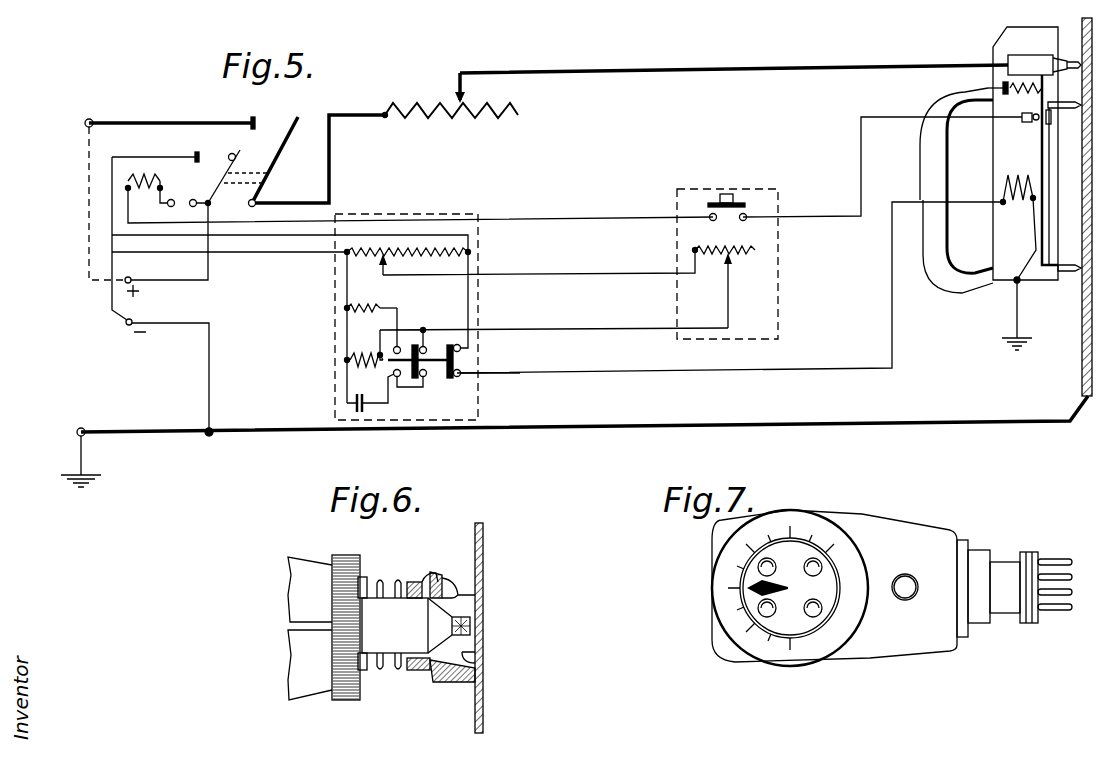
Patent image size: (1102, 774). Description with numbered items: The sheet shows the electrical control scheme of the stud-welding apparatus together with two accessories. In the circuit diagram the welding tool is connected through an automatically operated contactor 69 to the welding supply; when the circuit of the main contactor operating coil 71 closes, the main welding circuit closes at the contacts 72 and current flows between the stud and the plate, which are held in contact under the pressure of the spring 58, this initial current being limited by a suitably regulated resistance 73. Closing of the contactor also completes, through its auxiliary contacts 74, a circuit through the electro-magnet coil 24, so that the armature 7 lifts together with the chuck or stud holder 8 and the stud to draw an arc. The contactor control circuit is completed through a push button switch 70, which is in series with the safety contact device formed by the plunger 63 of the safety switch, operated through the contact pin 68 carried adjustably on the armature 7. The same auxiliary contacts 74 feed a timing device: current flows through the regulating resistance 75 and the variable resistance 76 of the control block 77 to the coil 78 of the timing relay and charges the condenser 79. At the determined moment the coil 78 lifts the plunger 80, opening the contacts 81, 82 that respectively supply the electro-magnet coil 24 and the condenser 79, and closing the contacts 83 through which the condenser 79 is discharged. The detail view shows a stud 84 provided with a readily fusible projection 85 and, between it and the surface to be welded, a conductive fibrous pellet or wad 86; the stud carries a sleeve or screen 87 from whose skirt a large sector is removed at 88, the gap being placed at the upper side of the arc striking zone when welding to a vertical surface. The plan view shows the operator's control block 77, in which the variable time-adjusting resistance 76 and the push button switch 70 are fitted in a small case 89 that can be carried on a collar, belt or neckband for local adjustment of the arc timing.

In FIG. 5, the armature 7 is at (1050, 177).
In FIG. 5, the chuck or stud holder 8 is at (1018, 62).
In FIG. 5, the electro-magnet coil 24 is at (1004, 188).
In FIG. 5, the spring 58 is at (1010, 88).
In FIG. 5, the plunger (safety contact device) 63 is at (1020, 119).
In FIG. 5, the contact pin 68 is at (1037, 122).
In FIG. 5, the contactor 69 is at (272, 127).
In FIG. 5, the push button switch 70 is at (728, 196).
In FIG. 7, the push button switch 70 is at (908, 580).
In FIG. 5, the main contactor operating coil 71 is at (160, 173).
In FIG. 5, the contacts 72 is at (258, 128).
In FIG. 5, the regulated resistance 73 is at (518, 108).
In FIG. 5, the auxiliary contacts 74 is at (231, 153).
In FIG. 5, the regulating resistance 75 is at (438, 250).
In FIG. 5, the variable resistance 76 is at (700, 250).
In FIG. 7, the variable resistance 76 is at (752, 608).
In FIG. 5, the control block 77 is at (715, 340).
In FIG. 5, the coil of the timing relay 78 is at (345, 357).
In FIG. 5, the condenser 79 is at (368, 416).
In FIG. 5, the plunger 80 is at (452, 380).
In FIG. 5, the contacts 81 is at (470, 368).
In FIG. 5, the contacts 82 is at (425, 378).
In FIG. 5, the contacts 83 is at (398, 377).
In FIG. 6, the stud 84 is at (391, 608).
In FIG. 6, the fusible projection 85 is at (462, 618).
In FIG. 6, the pellet or wad 86 is at (480, 646).
In FIG. 6, the sleeve or screen 87 is at (460, 688).
In FIG. 6, the removed sector 88 is at (459, 593).
In FIG. 7, the case 89 is at (893, 530).